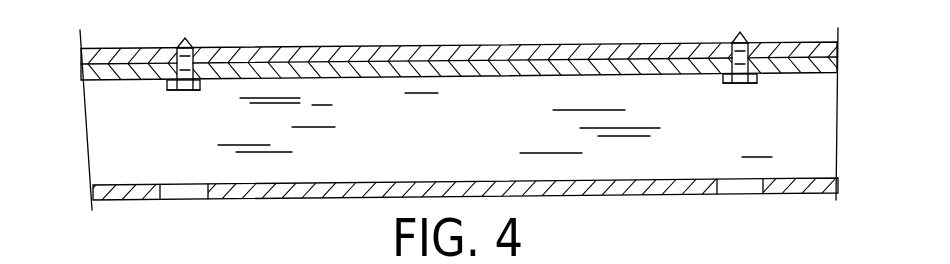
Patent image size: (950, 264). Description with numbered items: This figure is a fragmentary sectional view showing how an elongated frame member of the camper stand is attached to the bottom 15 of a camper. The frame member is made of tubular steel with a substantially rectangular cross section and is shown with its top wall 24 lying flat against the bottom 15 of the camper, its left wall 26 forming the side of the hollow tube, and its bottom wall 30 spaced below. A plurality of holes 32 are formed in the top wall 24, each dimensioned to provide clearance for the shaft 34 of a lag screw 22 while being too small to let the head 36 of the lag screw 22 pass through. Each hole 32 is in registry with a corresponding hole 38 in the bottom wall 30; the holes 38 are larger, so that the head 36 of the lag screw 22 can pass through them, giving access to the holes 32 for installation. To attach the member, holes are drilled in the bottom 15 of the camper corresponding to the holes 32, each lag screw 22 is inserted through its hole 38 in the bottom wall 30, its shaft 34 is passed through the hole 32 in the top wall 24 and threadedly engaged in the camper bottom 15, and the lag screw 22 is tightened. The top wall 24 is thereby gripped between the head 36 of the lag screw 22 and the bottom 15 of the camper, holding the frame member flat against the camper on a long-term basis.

The bottom of the camper 15 is at (628, 45).
The lag screw 22 is at (165, 110).
The top wall 24 is at (521, 67).
The left wall 26 is at (428, 155).
The bottom wall 30 is at (276, 198).
The hole 32 is at (185, 78).
The shaft 34 is at (187, 40).
The head 36 is at (200, 86).
The hole 38 is at (163, 190).